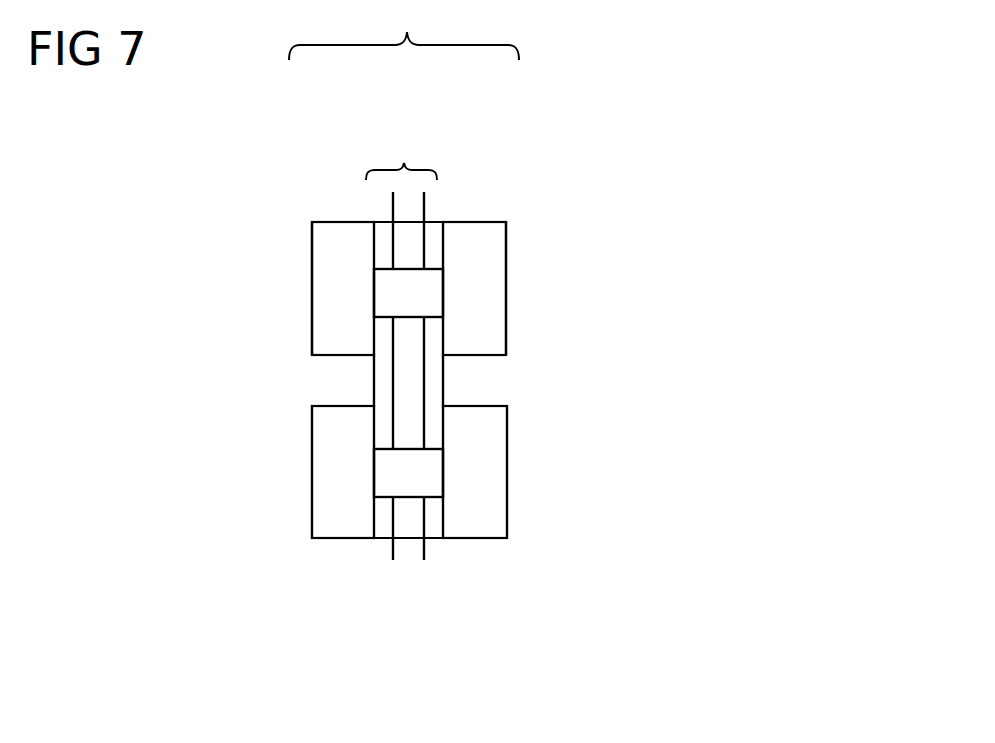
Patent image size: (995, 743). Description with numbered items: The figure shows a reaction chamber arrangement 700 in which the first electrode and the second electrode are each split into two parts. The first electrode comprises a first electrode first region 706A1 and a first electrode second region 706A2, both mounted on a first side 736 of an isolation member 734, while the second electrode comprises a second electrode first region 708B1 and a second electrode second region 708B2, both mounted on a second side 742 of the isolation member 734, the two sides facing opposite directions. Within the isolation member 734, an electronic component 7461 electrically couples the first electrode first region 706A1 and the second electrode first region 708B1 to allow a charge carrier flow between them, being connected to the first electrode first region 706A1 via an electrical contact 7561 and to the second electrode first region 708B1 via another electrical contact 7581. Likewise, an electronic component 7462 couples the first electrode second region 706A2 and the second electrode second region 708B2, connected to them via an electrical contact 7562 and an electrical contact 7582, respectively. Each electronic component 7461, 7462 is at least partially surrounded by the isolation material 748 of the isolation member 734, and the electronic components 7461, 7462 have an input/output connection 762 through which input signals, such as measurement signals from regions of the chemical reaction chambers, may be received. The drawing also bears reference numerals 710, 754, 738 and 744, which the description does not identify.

The reaction chamber arrangement 700 is at (729, 275).
The device layout 710 is at (822, 72).
The overall width of device 754 is at (404, 30).
The isolation member 734 is at (401, 151).
The first electrode first region 706A1 is at (332, 222).
The second electrode first region 708B1 is at (472, 222).
The first electrode second region 706A2 is at (340, 538).
The second electrode second region 708B2 is at (480, 538).
The first side of isolation member 736 is at (368, 242).
The first active region 738 is at (308, 322).
The electrical contact 7561 is at (370, 277).
The electrical contact 7562 is at (370, 475).
The second side of isolation member 742 is at (445, 242).
The second active region 744 is at (507, 347).
The electrical contact 7581 is at (445, 280).
The electronic component 7461 is at (425, 296).
The electrical contact 7582 is at (445, 463).
The electronic component 7462 is at (418, 483).
The isolation material 748 is at (435, 385).
The input/output connection 762 is at (377, 377).